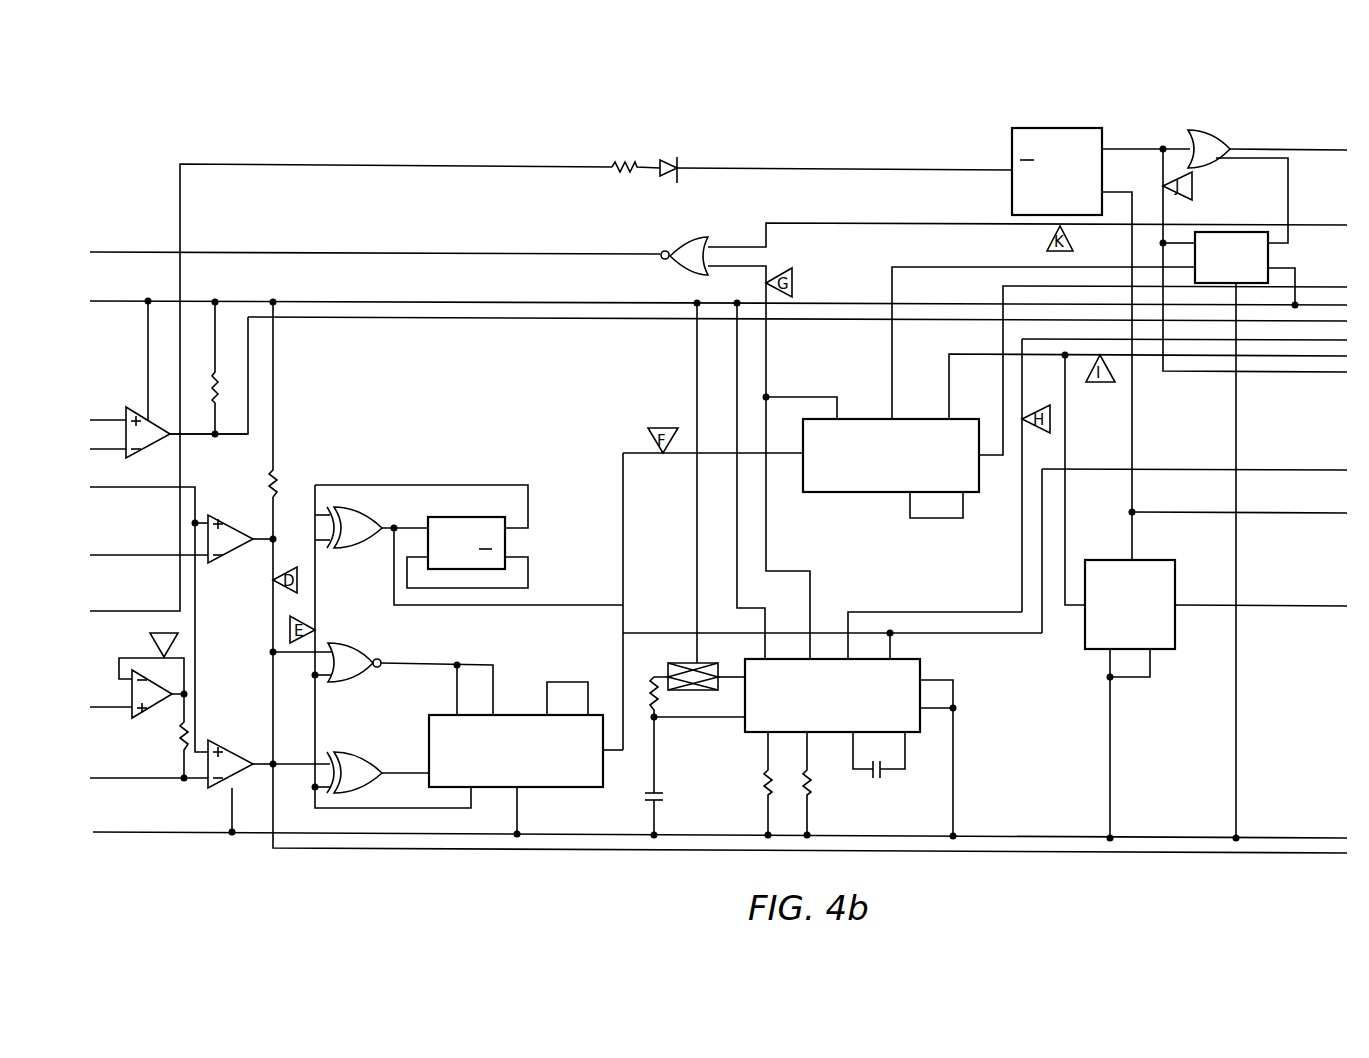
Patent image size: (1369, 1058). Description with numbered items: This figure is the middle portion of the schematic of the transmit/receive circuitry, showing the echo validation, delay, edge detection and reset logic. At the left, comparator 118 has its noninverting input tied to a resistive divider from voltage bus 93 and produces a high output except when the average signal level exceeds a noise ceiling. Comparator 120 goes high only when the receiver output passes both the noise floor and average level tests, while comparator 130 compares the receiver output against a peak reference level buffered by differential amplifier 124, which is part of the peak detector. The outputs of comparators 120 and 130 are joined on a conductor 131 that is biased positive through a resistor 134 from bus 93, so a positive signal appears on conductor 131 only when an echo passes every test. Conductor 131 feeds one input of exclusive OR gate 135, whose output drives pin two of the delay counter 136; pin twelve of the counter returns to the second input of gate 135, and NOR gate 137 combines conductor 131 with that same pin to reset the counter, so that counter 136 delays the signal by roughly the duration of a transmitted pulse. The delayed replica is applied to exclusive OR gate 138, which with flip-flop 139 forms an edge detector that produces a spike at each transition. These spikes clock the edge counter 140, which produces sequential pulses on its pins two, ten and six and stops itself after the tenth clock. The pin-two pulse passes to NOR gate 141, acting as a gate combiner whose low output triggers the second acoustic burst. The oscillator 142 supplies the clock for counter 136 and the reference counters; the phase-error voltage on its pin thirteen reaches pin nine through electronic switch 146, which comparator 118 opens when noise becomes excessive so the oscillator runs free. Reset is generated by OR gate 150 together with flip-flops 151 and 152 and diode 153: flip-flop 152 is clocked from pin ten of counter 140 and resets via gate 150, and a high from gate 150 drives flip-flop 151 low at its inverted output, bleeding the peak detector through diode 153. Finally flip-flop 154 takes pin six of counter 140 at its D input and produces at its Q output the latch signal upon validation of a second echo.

The voltage bus 93 is at (488, 300).
The comparator 118 is at (124, 430).
The comparator 120 is at (228, 520).
The differential amplifier 124 is at (165, 700).
The comparator 130 is at (228, 752).
The conductor 131 is at (273, 810).
The resistor 134 is at (280, 482).
The exclusive OR gate 135 is at (372, 754).
The counter 136 is at (512, 715).
The NOR gate 137 is at (356, 682).
The exclusive OR gate 138 is at (360, 548).
The flip-flop 139 is at (468, 517).
The counter or decoder 140 is at (870, 419).
The NOR gate 141 is at (688, 237).
The phase detector and voltage controlled oscillator 142 is at (752, 733).
The electronic switch 146 is at (678, 663).
The OR gate 150 is at (1210, 132).
The flip-flop 151 is at (1042, 128).
The flip-flop 152 is at (1205, 232).
The diode 153 is at (666, 160).
The flip-flop 154 is at (1085, 630).